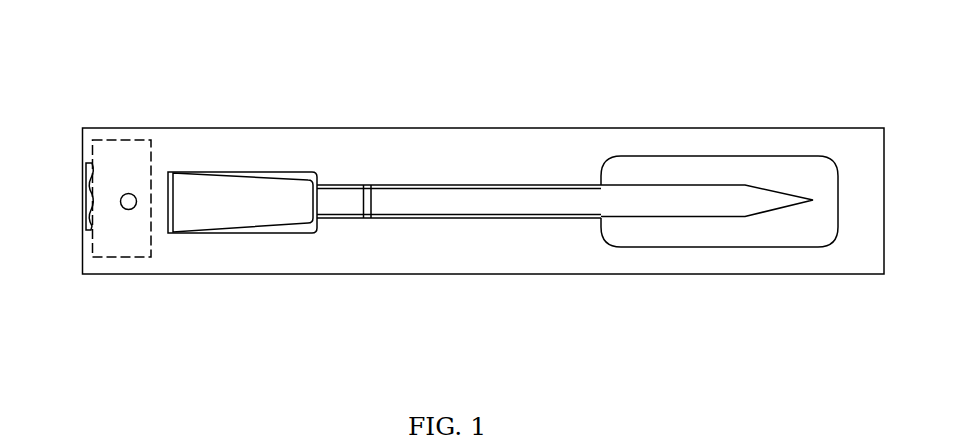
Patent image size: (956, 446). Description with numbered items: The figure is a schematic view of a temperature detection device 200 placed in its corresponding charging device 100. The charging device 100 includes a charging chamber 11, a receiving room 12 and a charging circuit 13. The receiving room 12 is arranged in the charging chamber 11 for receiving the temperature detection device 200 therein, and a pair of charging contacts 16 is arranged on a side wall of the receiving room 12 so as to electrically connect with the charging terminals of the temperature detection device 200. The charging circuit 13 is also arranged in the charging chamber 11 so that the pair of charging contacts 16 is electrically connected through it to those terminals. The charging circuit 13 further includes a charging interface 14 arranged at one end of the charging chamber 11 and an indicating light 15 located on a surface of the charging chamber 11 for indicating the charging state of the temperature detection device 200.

The charging device 100 is at (478, 102).
The charging chamber 11 is at (303, 128).
The receiving room 12 is at (702, 172).
The charging circuit 13 is at (107, 152).
The charging interface 14 is at (82, 183).
The indicating light 15 is at (129, 209).
The pair of charging contacts 16 is at (168, 172).
The temperature detection device 200 is at (660, 246).